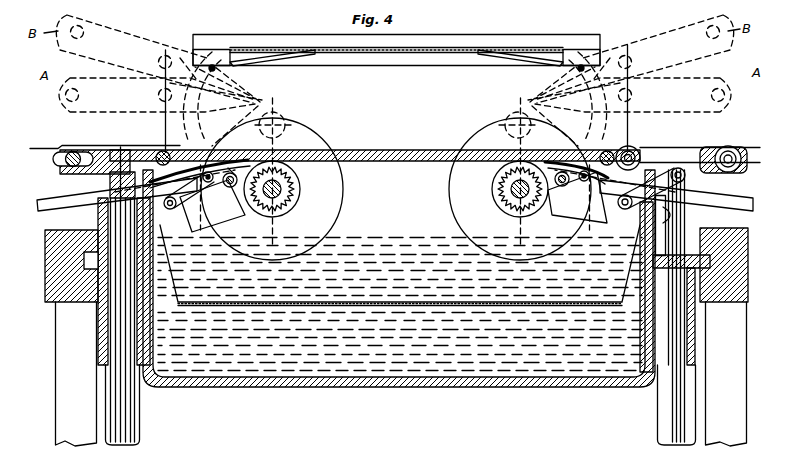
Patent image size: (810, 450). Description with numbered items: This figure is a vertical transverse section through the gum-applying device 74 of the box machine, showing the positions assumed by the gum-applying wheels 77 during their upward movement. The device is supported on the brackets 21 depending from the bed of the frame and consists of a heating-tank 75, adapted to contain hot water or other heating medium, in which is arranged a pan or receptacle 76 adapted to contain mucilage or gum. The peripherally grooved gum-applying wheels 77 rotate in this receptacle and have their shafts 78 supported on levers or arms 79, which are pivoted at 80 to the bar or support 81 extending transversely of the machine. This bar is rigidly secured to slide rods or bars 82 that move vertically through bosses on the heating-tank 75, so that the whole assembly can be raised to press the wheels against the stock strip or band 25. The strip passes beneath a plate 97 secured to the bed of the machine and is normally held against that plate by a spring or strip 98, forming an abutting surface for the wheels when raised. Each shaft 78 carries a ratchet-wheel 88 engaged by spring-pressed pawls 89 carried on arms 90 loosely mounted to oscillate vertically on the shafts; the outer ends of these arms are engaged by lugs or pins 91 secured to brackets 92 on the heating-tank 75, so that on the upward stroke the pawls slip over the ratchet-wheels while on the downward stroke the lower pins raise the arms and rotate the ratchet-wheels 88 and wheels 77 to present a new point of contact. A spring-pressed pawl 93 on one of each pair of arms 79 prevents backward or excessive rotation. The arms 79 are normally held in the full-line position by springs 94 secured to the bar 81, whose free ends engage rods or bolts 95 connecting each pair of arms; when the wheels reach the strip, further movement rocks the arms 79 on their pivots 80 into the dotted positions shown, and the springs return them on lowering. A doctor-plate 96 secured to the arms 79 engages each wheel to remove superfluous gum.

The brackets 21 is at (63, 394).
The stock strip or band 25 is at (279, 47).
The gum-applying device 74 is at (637, 122).
The heating-tank 75 is at (402, 387).
The gum pan or receptacle 76 is at (399, 228).
The gum-applying wheels 77 is at (300, 130).
The shafts 78 is at (300, 188).
The levers or arms 79 is at (98, 56).
The pivots 80 is at (167, 150).
The bar or support 81 is at (374, 150).
The slide rods or bars 82 is at (140, 429).
The ratchet-wheel 88 is at (285, 193).
The spring-pressed pawls 89 is at (250, 152).
The arms 90 is at (52, 201).
The lugs or pins 91 is at (170, 210).
The brackets 92 is at (660, 216).
The spring-pressed pawl 93 is at (566, 152).
The springs 94 is at (34, 147).
The rods or bolts 95 is at (54, 159).
The doctor-plate 96 is at (236, 210).
The plate 97 is at (538, 36).
The spring or strip 98 is at (294, 58).